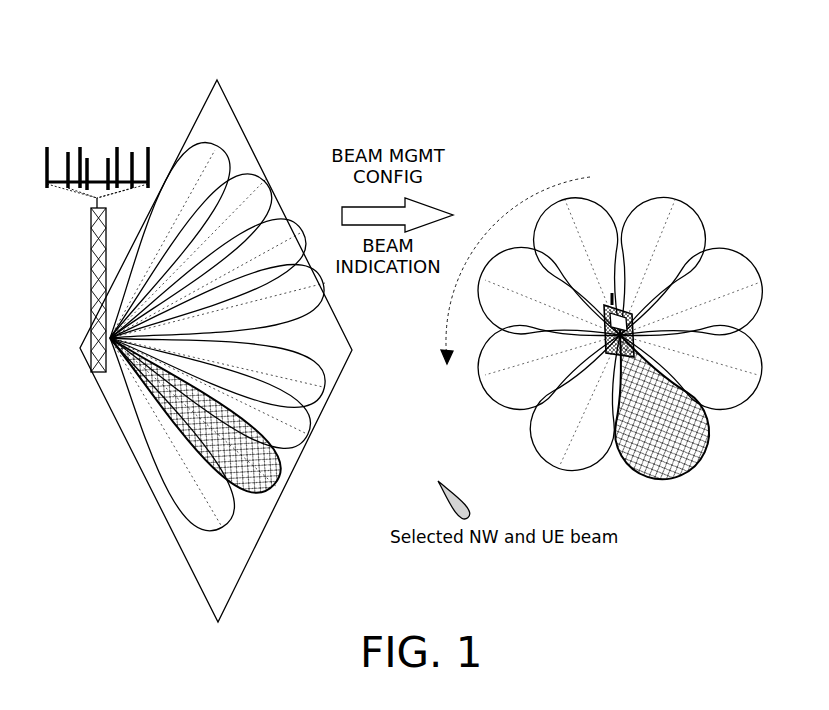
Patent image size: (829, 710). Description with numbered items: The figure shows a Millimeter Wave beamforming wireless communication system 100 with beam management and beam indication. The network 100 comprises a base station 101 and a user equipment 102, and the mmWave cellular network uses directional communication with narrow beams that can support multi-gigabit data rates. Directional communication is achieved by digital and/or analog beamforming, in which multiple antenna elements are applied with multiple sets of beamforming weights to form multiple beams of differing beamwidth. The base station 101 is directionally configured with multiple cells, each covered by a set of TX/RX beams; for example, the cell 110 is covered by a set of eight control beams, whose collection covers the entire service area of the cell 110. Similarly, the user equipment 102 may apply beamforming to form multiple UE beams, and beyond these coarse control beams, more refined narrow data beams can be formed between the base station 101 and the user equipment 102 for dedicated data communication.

The Millimeter Wave beamforming wireless communication system 100 is at (712, 116).
The base station 101 is at (95, 148).
The user equipment 102 is at (630, 307).
The cell 110 is at (238, 570).